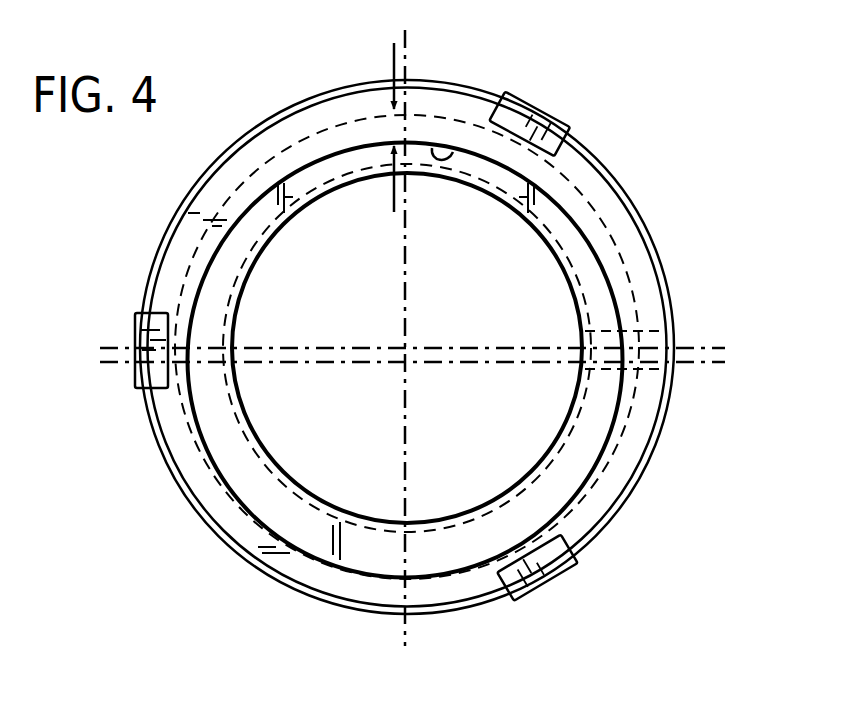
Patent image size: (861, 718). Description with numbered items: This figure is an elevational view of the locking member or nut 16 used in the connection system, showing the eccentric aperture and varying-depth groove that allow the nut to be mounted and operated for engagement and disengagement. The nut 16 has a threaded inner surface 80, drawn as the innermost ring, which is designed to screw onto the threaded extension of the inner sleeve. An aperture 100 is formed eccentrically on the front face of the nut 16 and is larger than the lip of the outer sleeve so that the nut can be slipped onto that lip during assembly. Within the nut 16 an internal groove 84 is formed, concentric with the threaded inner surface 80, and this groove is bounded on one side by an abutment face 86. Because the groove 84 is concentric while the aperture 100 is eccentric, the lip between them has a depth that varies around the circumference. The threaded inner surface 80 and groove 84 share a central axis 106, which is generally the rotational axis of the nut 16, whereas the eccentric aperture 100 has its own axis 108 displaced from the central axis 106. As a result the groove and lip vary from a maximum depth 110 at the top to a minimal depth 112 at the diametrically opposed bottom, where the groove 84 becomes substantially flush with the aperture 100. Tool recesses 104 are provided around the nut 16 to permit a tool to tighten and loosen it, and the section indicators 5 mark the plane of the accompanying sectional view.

The section line 5- 5 is at (550, 100).
The nut 16 is at (96, 453).
The threaded inner surface 80 is at (573, 297).
The internal groove 84 is at (432, 148).
The abutment face 86 is at (248, 473).
The aperture 100 is at (618, 436).
The tool recesses 104 is at (147, 330).
The central axis 106 is at (404, 348).
The axis 108 is at (404, 362).
The maximum depth 110 is at (394, 70).
The minimal depth 112 is at (385, 592).